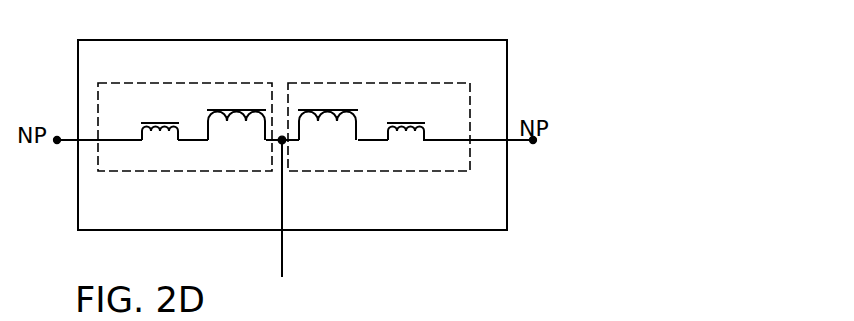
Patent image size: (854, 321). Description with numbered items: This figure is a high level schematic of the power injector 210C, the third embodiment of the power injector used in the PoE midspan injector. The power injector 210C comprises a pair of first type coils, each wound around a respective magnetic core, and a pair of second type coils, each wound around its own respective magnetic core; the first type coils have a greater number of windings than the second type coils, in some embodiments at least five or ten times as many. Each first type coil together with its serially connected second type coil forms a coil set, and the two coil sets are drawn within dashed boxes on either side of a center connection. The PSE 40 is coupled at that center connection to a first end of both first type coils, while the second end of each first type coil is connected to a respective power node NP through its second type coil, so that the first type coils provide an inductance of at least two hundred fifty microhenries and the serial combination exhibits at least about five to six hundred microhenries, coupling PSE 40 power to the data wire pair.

The power injector 210C is at (345, 230).
The PSE 40 is at (284, 219).